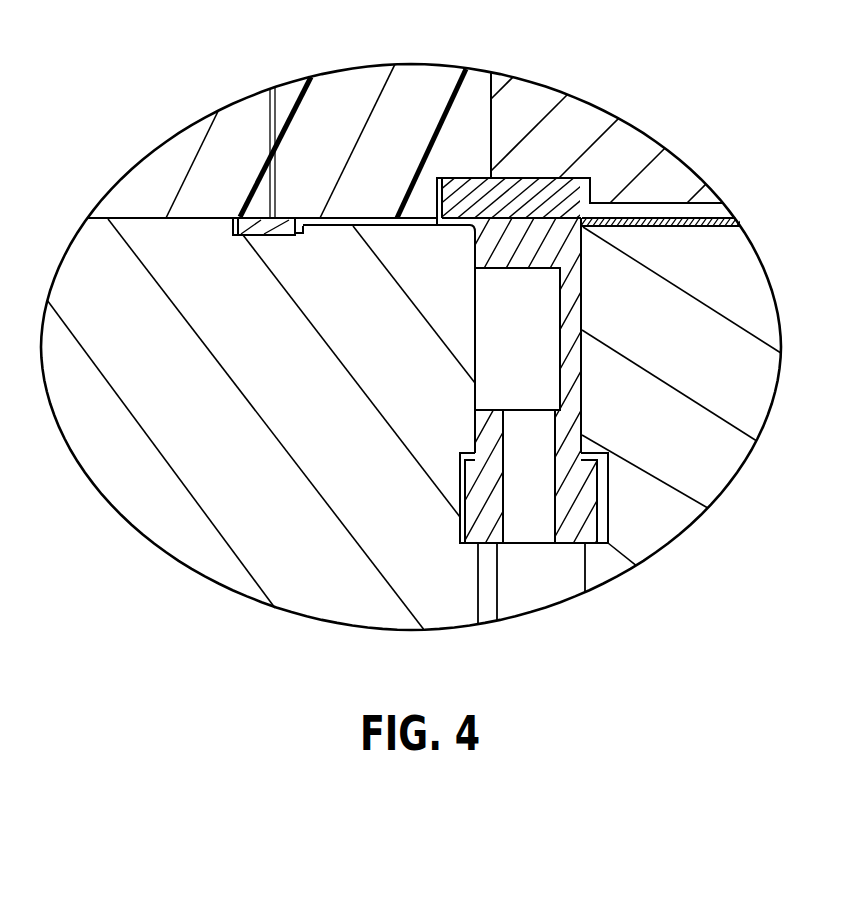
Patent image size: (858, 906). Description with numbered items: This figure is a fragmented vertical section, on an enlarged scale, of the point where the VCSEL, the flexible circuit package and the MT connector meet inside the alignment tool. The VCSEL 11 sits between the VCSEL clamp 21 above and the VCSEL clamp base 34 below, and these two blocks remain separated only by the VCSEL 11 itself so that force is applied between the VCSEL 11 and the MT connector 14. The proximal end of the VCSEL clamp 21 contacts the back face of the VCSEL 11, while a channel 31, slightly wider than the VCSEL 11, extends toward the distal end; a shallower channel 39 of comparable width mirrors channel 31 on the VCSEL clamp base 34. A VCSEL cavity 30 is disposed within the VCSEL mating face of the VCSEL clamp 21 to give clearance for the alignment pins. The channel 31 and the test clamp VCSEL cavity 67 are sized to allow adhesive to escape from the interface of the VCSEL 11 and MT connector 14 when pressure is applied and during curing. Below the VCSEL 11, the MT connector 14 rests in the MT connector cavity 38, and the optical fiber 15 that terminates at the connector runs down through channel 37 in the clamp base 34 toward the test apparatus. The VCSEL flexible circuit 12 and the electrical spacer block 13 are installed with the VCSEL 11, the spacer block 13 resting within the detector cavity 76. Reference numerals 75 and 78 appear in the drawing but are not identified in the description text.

The VCSEL 11 is at (473, 188).
The VCSEL flexible circuit 12 is at (385, 216).
The electrical spacer block 13 is at (258, 216).
The MT connector 14 is at (571, 392).
The optical fiber 15 is at (526, 597).
The VCSEL clamp 21 is at (581, 111).
The VCSEL cavity 30 is at (590, 183).
The channel 31 is at (654, 213).
The VCSEL clamp base 34 is at (716, 383).
The channel 37 is at (552, 582).
The MT connector cavity 38 is at (610, 480).
The shallower channel 39 is at (681, 228).
The test clamp VCSEL cavity 67 is at (439, 226).
The lower surface of plate 75 is at (364, 226).
The detector cavity 76 is at (232, 237).
The gap line 78 is at (272, 88).